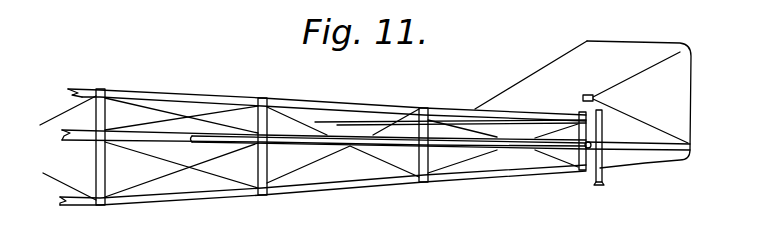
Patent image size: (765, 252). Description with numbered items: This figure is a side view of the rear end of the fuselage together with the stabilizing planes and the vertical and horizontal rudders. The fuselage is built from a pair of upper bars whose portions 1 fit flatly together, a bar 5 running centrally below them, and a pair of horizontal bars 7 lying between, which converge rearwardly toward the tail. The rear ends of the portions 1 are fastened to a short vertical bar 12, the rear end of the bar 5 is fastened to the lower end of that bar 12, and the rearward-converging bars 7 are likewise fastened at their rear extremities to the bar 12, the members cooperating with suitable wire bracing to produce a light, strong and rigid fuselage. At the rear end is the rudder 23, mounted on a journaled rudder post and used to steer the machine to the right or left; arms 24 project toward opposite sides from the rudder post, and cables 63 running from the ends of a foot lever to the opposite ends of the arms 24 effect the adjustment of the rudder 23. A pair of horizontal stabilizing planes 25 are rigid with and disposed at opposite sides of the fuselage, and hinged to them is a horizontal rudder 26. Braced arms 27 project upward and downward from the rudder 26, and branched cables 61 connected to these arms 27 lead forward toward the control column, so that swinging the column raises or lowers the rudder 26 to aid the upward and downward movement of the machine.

The portions of bars 1 is at (84, 91).
The bar 5 is at (193, 199).
The horizontal bars 7 is at (75, 140).
The short vertical bar 12 is at (553, 157).
The rudder 23 is at (639, 104).
The arms 24 is at (594, 96).
The horizontal stabilizing planes 25 is at (480, 143).
The horizontal rudder 26 is at (637, 146).
The braced arms 27 is at (601, 184).
The branched cables 61 is at (586, 116).
The cables 63 is at (527, 100).